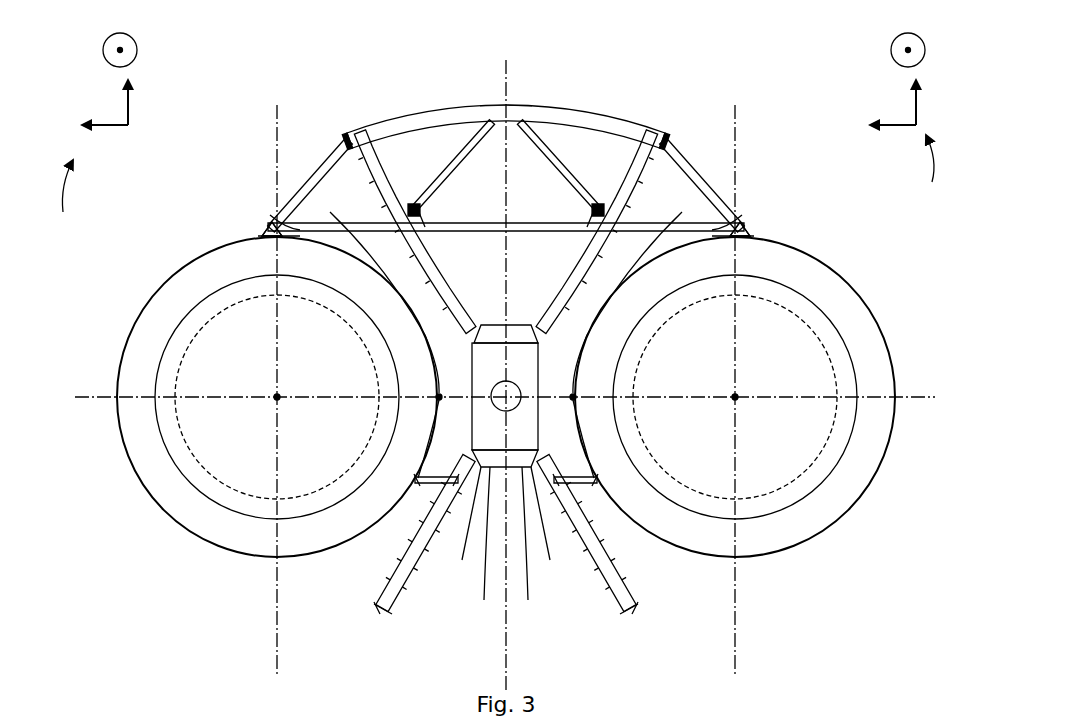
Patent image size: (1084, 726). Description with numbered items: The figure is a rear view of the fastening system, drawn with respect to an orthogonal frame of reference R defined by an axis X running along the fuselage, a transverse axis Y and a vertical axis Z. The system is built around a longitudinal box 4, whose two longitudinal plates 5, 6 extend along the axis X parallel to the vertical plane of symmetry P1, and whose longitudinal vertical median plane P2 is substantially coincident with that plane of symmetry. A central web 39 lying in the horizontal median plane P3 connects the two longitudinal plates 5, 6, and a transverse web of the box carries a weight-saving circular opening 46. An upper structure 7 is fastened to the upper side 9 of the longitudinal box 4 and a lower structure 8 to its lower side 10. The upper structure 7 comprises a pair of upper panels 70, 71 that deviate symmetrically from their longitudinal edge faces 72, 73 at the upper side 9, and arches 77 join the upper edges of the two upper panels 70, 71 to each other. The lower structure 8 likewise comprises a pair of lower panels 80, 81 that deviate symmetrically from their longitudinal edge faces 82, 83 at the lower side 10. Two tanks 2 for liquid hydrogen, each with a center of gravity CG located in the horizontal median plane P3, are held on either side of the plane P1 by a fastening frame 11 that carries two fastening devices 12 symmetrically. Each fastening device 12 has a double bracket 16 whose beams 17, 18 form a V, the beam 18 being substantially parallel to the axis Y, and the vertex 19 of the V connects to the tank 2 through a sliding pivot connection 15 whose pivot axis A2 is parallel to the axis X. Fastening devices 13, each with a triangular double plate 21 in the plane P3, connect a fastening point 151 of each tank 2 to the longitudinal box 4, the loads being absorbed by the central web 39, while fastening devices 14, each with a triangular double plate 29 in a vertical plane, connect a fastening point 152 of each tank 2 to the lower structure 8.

The tank 2 is at (185, 322).
The longitudinal box 4 is at (490, 480).
The longitudinal plate 5 is at (430, 484).
The longitudinal plate 6 is at (582, 490).
The upper structure 7 is at (428, 100).
The lower structure 8 is at (575, 620).
The upper side 9 is at (528, 300).
The lower side 10 is at (499, 468).
The fastening frame 11 is at (634, 100).
The fastening device 12 is at (350, 140).
The fastening device 13 is at (452, 404).
The fastening device 14 is at (469, 414).
The sliding pivot connection 15 is at (268, 232).
The double bracket 16 is at (276, 202).
The beam 17 is at (340, 132).
The beam 18 is at (345, 222).
The vertex 19 is at (270, 215).
The double plate 21 is at (455, 212).
The double plate 29 is at (420, 478).
The central web 39 is at (500, 380).
The circular opening 46 is at (514, 468).
The upper panel 70 is at (358, 150).
The upper panel 71 is at (655, 132).
The longitudinal edge face 72 is at (467, 297).
The longitudinal edge face 73 is at (556, 326).
The arch 77 is at (530, 103).
The lower panel 80 is at (390, 590).
The lower panel 81 is at (622, 590).
The longitudinal edge face 82 is at (476, 466).
The longitudinal edge face 83 is at (536, 466).
The fastening point 151 is at (439, 396).
The fastening point 152 is at (415, 480).
The pivot axis A2 is at (262, 235).
The center of gravity CG is at (277, 397).
The vertical plane of symmetry P1 is at (500, 95).
The longitudinal vertical median plane P2 is at (276, 636).
The horizontal median plane P3 is at (90, 396).
The axis X is at (514, 35).
The axis Y is at (499, 143).
The axis Z is at (538, 100).
The orthogonal frame of reference R is at (497, 187).